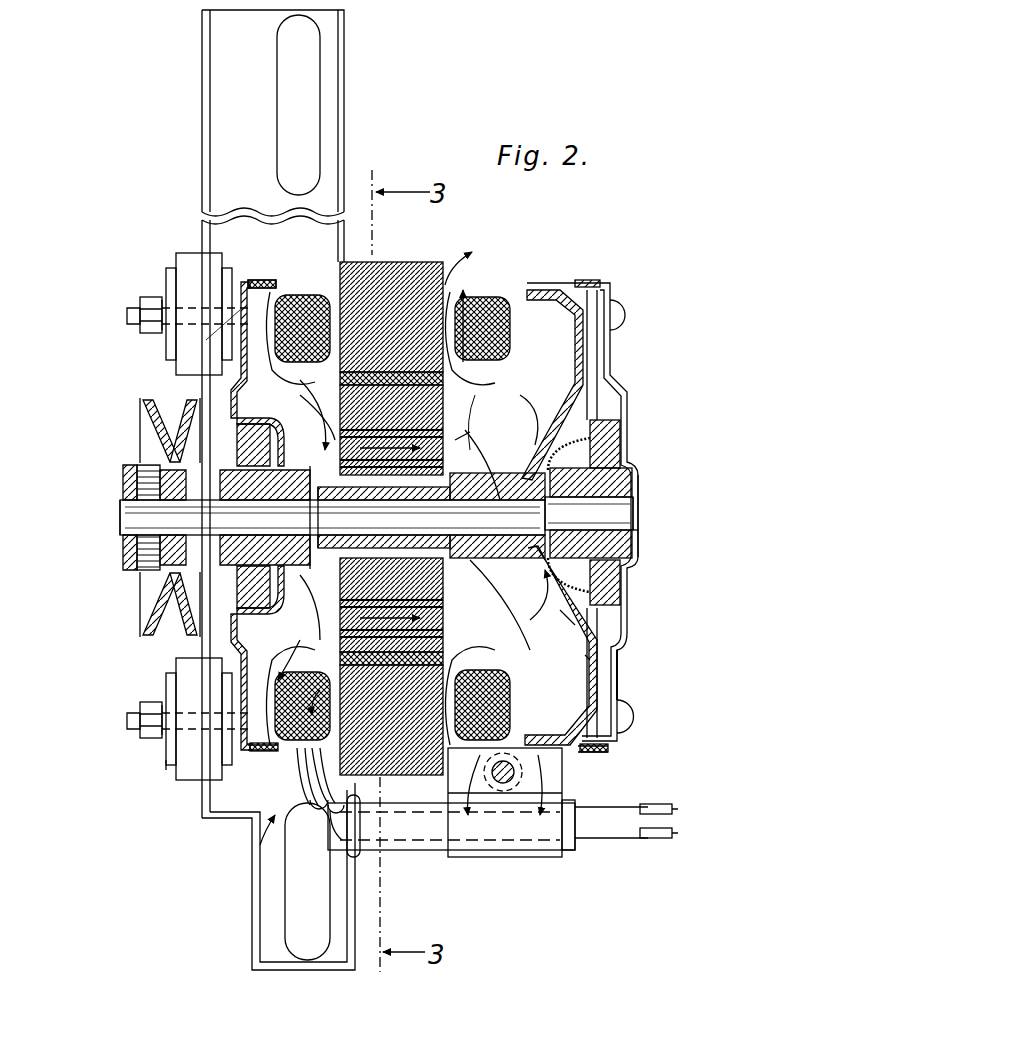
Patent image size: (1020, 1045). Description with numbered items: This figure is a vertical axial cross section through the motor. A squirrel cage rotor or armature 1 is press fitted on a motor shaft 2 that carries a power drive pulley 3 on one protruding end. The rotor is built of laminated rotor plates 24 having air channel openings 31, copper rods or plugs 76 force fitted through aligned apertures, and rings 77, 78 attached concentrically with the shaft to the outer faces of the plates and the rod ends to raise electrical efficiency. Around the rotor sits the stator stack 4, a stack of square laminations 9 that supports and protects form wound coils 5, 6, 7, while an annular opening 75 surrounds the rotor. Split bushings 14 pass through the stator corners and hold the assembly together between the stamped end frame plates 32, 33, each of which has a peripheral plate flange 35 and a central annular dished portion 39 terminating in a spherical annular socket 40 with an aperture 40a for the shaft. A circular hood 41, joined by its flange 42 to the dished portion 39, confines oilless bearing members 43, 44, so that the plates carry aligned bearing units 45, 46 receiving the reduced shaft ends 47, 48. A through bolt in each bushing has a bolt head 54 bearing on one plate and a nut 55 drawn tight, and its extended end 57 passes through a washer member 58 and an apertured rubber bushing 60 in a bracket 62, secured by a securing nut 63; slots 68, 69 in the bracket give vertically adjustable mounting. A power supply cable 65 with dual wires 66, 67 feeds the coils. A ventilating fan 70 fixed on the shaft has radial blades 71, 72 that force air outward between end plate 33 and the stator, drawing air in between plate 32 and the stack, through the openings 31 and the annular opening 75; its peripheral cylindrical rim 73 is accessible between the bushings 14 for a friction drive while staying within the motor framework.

The squirrel cage rotor 1 is at (450, 440).
The motor shaft 2 is at (498, 455).
The power drive pulley 3 is at (190, 432).
The stator stack 4 is at (409, 494).
The form wound coil 5 is at (497, 295).
The form wound coil 6 is at (490, 392).
The form wound coil 7 is at (555, 762).
The laminations 9 is at (406, 265).
The split bushings 14 is at (265, 300).
The rotor plates 24 is at (304, 607).
The air channel openings 31 is at (376, 515).
The end frame plate 32 is at (262, 280).
The end frame plate 33 is at (586, 480).
The peripheral plate flange 35 is at (260, 750).
The central annular dished portion 39 is at (630, 582).
The spherical annular socket 40 is at (592, 560).
The aperture 40a is at (636, 530).
The circular hood 41 is at (565, 440).
The hood flange 42 is at (628, 615).
The oilless bearing member 43 is at (622, 440).
The oilless bearing member 44 is at (640, 472).
The bearing unit 45 is at (238, 598).
The bearing unit 46 is at (642, 488).
The reduced shaft end 47 is at (128, 512).
The reduced shaft end 48 is at (628, 505).
The bolt head 54 is at (620, 312).
The nut 55 is at (222, 348).
The extended bolt end 57 is at (142, 312).
The washer member 58 is at (168, 765).
The rubber bushing 60 is at (183, 255).
The bracket 62 is at (298, 514).
The securing nut 63 is at (152, 332).
The power supply cable 65 is at (600, 828).
The wire 66 is at (302, 775).
The wire 67 is at (308, 795).
The slot 68 is at (312, 63).
The slot 69 is at (302, 948).
The ventilating fan 70 is at (585, 360).
The radial blade 71 is at (560, 630).
The radial blade 72 is at (585, 655).
The peripheral cylindrical rim 73 is at (545, 285).
The annular opening 75 is at (480, 360).
The conducting rods 76 is at (517, 558).
The ring 77 is at (301, 415).
The ring 78 is at (500, 604).